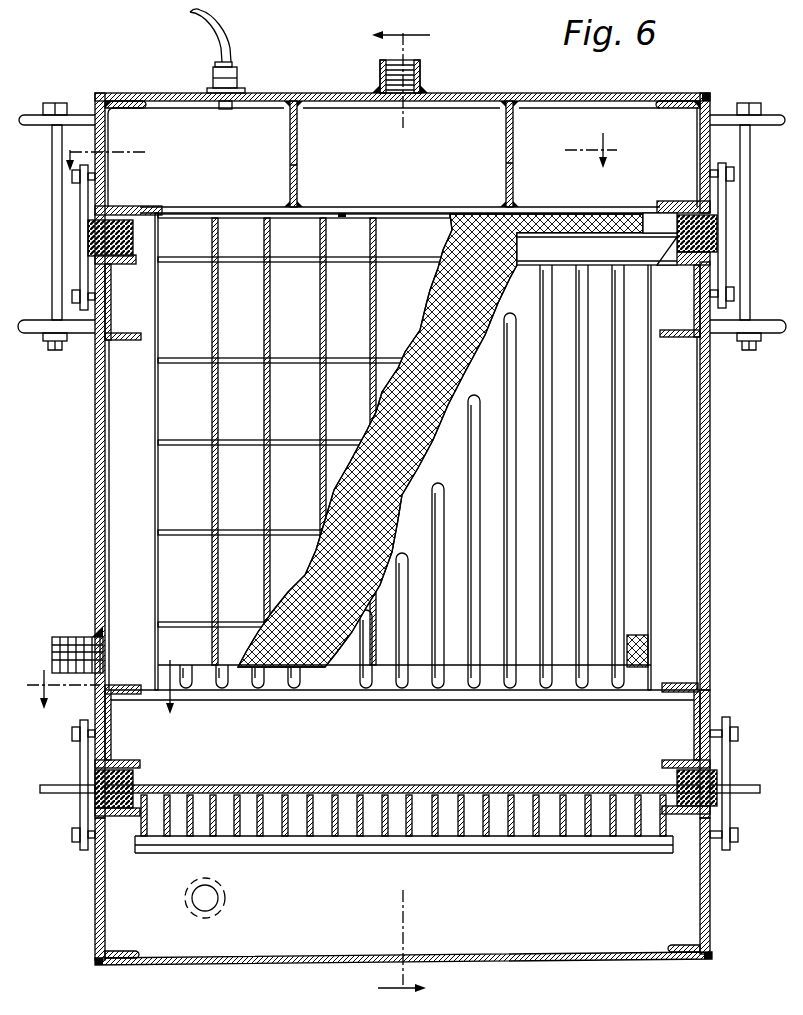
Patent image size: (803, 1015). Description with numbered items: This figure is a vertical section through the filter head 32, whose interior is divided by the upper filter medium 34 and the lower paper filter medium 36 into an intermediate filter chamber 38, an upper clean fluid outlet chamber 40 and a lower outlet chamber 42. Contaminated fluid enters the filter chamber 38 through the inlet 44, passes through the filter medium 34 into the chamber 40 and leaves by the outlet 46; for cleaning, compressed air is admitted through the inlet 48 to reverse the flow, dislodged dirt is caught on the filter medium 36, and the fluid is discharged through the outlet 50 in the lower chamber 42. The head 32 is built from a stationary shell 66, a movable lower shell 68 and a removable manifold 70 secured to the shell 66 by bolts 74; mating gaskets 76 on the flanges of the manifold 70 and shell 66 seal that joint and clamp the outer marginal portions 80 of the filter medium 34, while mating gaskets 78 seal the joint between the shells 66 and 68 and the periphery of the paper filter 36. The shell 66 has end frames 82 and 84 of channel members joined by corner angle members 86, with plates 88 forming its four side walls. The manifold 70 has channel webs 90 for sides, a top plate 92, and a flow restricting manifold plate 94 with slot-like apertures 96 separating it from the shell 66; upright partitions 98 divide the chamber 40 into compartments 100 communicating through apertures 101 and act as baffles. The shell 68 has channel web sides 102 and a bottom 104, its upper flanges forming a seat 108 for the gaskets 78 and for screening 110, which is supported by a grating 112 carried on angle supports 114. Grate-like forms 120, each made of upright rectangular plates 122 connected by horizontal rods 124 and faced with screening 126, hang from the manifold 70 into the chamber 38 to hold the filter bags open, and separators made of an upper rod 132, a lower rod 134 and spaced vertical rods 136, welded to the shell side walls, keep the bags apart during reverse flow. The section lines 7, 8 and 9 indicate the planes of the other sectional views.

The section line 7- 7 is at (102, 698).
The section line 8- 8 is at (401, 514).
The section line 9- 9 is at (349, 151).
The head 32 is at (710, 415).
The filter medium 34 is at (155, 463).
The second filter medium 36 is at (300, 786).
The filter chamber 38 is at (404, 754).
The clean fluid outlet chamber 40 is at (634, 103).
The lower outlet chamber 42 is at (503, 961).
The inlet 44 is at (104, 657).
The outlet 46 is at (408, 100).
The inlet 48 is at (229, 108).
The outlet 50 is at (217, 910).
The shell 66 is at (712, 516).
The shell 68 is at (712, 913).
The manifold 70 is at (711, 92).
The bolts 74 is at (52, 216).
The gaskets 76 is at (121, 208).
The gaskets 78 is at (136, 778).
The outer marginal portions 80 is at (133, 222).
The end frame 82 is at (126, 341).
The end frame 84 is at (128, 686).
The angle members 86 is at (104, 498).
The plates 88 is at (95, 432).
The webs 90 is at (108, 134).
The plate 92 is at (470, 93).
The manifold plate 94 is at (408, 208).
The apertures 96 is at (343, 213).
The partitions 98 is at (297, 118).
The compartments 100 is at (200, 173).
The apertures 101 is at (297, 152).
The sides 102 is at (95, 903).
The bottom 104 is at (210, 964).
The seat 108 is at (95, 819).
The screening 110 is at (475, 798).
The grating 112 is at (464, 828).
The angle supports 114 is at (580, 846).
The forms 120 is at (218, 238).
The plates 122 is at (212, 400).
The rods 124 is at (306, 263).
The screening 126 is at (383, 399).
The upper horizontal rod 132 is at (572, 262).
The lower horizontal rod 134 is at (539, 694).
The vertical rods 136 is at (477, 422).